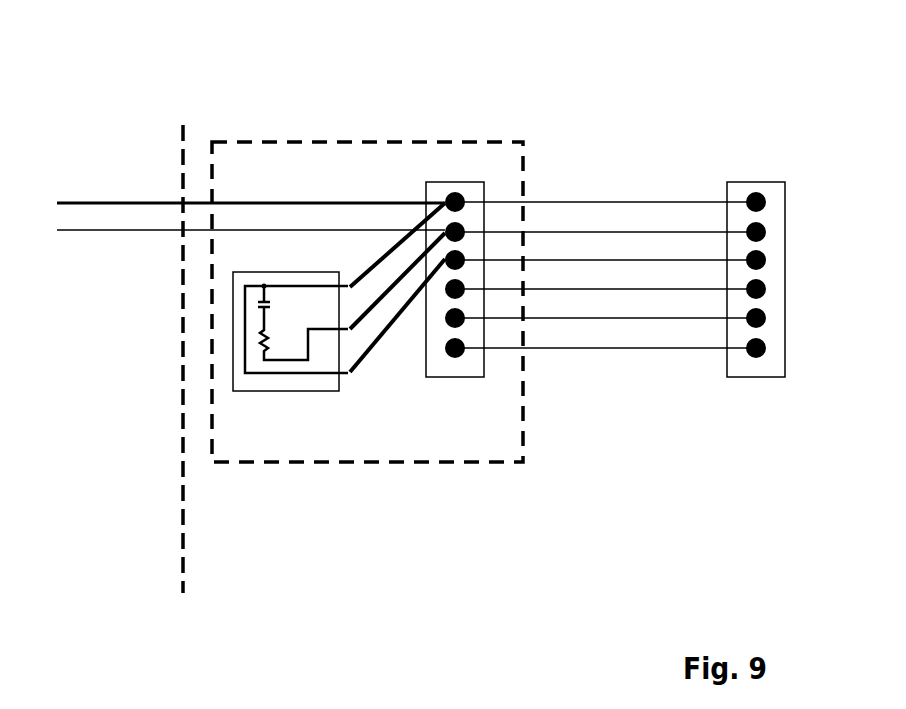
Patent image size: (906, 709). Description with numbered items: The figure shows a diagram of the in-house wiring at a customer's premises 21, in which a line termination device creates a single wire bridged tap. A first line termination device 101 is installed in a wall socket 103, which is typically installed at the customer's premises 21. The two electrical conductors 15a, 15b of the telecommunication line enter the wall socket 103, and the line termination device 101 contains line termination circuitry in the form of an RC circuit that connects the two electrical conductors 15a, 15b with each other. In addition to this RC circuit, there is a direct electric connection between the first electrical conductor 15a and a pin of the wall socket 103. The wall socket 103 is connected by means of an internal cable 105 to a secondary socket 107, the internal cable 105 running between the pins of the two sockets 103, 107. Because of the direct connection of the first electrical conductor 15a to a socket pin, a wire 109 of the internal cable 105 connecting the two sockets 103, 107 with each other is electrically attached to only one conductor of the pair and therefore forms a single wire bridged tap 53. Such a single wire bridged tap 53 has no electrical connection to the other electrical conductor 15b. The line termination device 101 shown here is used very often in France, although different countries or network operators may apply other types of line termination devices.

The customer premises equipment 21 is at (253, 76).
The wall socket 103 is at (393, 140).
The first electrical conductor 15a is at (120, 200).
The second electrical conductor 15b is at (127, 232).
The line termination device 101 is at (303, 392).
The internal cable 105 is at (623, 148).
The wire 109 is at (562, 261).
The secondary socket 107 is at (773, 180).
The single wire bridged tap 53 is at (659, 500).